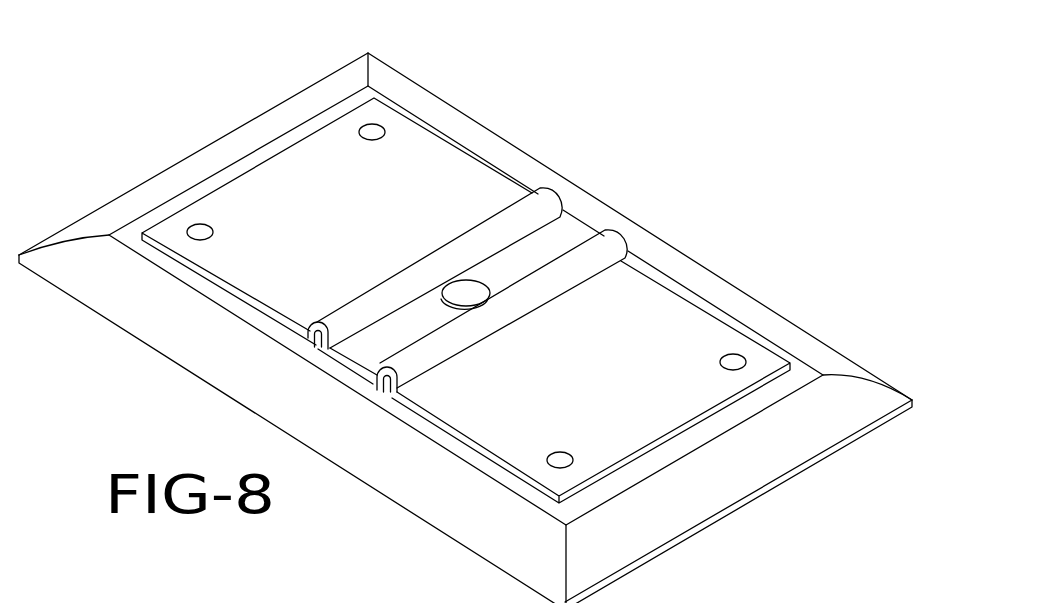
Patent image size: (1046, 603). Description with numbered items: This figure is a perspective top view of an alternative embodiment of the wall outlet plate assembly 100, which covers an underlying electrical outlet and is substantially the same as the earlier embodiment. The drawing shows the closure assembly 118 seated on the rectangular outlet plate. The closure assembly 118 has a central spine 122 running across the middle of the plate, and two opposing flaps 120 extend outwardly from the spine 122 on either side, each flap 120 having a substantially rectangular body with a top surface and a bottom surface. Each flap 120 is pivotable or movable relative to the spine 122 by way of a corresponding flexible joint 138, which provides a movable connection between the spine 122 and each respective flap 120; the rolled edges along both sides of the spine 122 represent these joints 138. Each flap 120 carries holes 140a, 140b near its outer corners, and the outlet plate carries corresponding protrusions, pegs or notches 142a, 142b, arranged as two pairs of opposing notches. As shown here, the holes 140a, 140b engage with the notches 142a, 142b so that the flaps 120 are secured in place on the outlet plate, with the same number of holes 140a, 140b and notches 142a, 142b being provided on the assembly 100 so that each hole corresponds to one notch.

The wall outlet plate assembly 100 is at (807, 183).
The closure assembly 118 is at (272, 162).
The flaps 120 is at (432, 172).
The central spine 122 is at (522, 234).
The flexible joint 138 is at (533, 207).
The hole 140a is at (731, 355).
The hole 140b is at (380, 135).
The notch 142a is at (561, 459).
The notch 142b is at (200, 230).